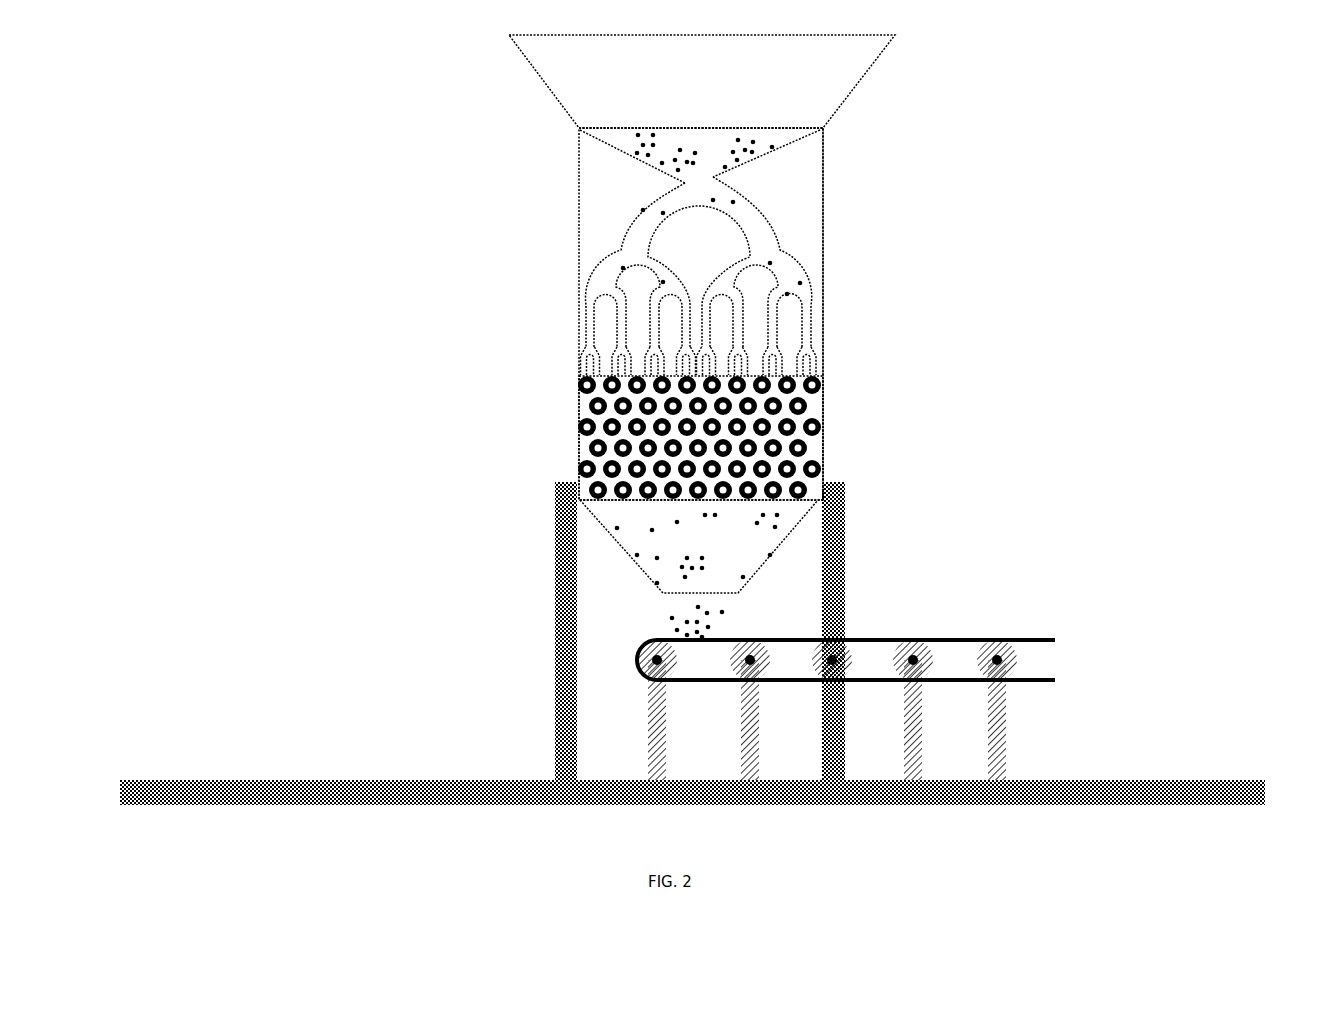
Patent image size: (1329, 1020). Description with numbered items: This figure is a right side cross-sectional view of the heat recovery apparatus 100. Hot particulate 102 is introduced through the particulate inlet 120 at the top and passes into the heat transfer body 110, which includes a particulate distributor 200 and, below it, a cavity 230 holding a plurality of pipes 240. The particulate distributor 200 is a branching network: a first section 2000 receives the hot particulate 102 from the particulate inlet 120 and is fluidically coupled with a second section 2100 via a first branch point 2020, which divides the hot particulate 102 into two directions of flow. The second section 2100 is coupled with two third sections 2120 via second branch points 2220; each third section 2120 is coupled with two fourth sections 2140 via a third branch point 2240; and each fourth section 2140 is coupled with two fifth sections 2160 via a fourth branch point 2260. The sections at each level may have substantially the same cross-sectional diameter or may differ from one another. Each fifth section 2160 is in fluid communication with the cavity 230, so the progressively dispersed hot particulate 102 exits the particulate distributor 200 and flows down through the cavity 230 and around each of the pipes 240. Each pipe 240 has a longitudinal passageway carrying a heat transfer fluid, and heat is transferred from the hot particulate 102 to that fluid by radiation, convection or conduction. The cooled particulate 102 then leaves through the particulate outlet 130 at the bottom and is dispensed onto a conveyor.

The heat recovery apparatus 100 is at (1083, 181).
The hot particulate 102 is at (630, 132).
The heat transfer body 110 is at (830, 224).
The particulate inlet 120 is at (533, 75).
The particulate outlet 130 is at (634, 572).
The particulate distributor 200 is at (833, 150).
The first section 2000 is at (620, 158).
The first branch point 2020 is at (724, 179).
The second section 2100 is at (620, 213).
The third section 2120 is at (600, 272).
The fourth section 2140 is at (583, 320).
The fifth section 2160 is at (578, 366).
The second branch point 2220 is at (780, 253).
The third branch point 2240 is at (810, 288).
The fourth branch point 2260 is at (818, 343).
The cavity 230 is at (823, 452).
The pipes 240 is at (582, 428).